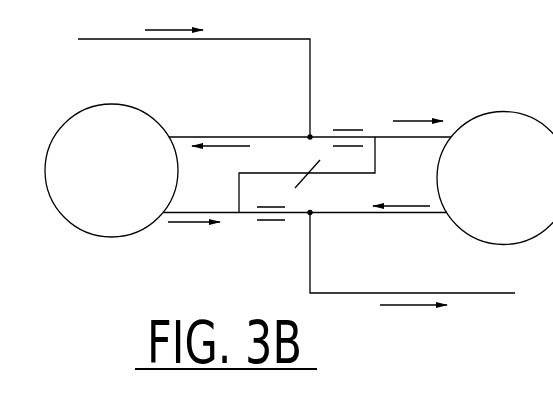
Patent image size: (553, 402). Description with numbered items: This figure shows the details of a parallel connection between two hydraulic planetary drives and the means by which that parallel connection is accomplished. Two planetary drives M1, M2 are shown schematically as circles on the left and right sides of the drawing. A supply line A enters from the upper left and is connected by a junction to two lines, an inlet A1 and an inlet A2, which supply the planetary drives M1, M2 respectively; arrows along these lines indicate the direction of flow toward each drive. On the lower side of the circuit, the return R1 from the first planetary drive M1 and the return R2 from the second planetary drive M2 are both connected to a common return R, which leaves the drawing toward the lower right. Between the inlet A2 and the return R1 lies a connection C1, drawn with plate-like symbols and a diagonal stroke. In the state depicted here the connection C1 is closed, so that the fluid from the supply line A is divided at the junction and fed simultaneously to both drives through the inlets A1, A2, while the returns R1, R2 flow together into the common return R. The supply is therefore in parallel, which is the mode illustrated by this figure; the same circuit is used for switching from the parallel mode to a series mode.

The planetary drive M1 is at (111, 170).
The planetary drive M2 is at (495, 178).
The supply line A is at (185, 82).
The inlet A1 is at (239, 155).
The inlet A2 is at (380, 117).
The common return R is at (421, 259).
The return R1 is at (237, 234).
The return R2 is at (378, 197).
The connection C1 is at (307, 175).